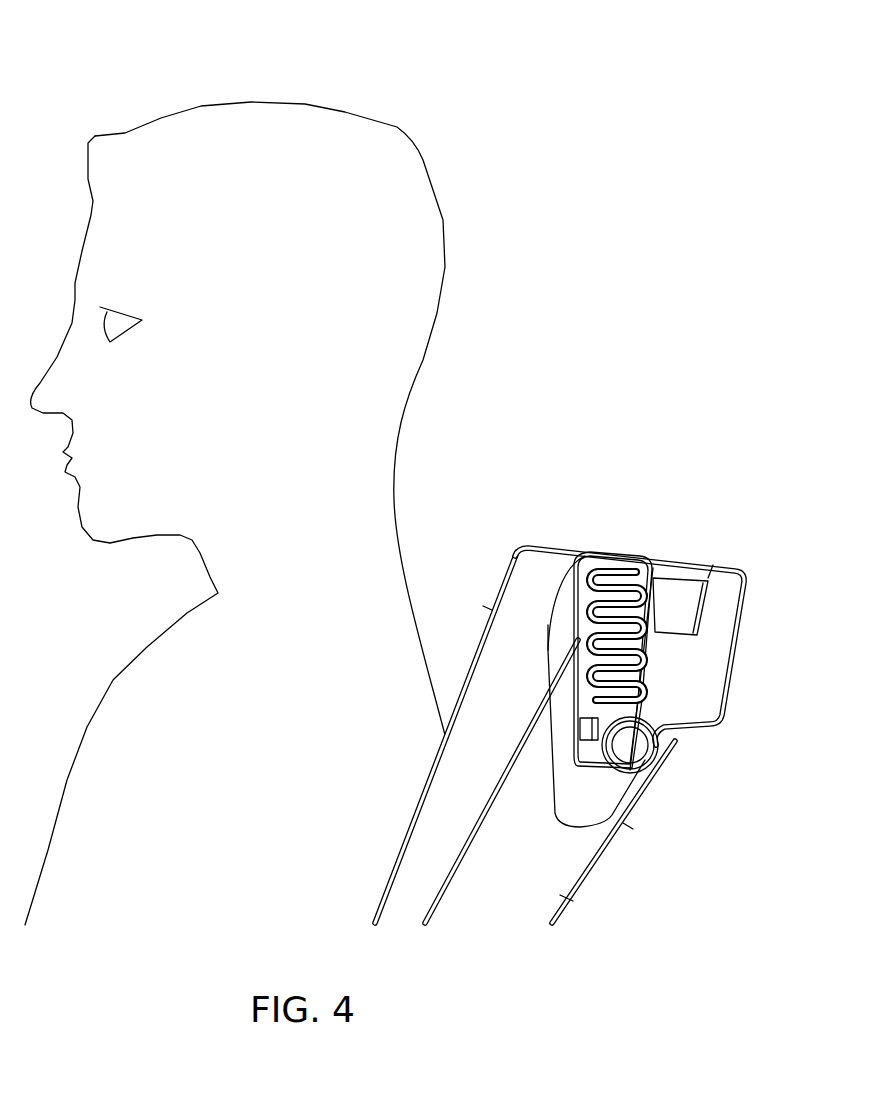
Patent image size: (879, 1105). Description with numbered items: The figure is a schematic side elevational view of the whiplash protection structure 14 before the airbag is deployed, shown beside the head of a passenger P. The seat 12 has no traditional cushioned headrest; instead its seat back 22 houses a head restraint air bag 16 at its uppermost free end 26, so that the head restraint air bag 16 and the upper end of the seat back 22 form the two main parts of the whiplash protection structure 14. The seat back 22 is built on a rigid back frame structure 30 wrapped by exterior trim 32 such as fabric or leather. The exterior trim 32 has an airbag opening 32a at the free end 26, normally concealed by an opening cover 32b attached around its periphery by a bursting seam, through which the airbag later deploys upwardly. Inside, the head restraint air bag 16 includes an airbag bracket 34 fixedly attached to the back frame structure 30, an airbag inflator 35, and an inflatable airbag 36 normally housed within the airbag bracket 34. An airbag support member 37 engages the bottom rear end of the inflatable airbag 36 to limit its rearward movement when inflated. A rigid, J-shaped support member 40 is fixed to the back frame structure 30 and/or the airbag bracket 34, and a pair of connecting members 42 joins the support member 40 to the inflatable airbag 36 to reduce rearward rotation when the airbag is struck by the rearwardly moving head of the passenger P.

The passenger P is at (358, 74).
The front seat 12 is at (636, 465).
The whiplash protection structure 14 is at (731, 761).
The head restraint air bag 16 is at (663, 666).
The seat back 22 is at (634, 858).
The free end 26 is at (735, 572).
The back frame structure 30 is at (438, 885).
The exterior trim 32 is at (411, 828).
The airbag opening 32a is at (712, 566).
The opening cover 32b is at (556, 546).
The airbag bracket 34 is at (570, 740).
The airbag inflator 35 is at (587, 745).
The inflatable airbag 36 is at (657, 638).
The airbag support member 37 is at (703, 617).
The support member 40 is at (575, 828).
The connecting members 42 is at (546, 625).